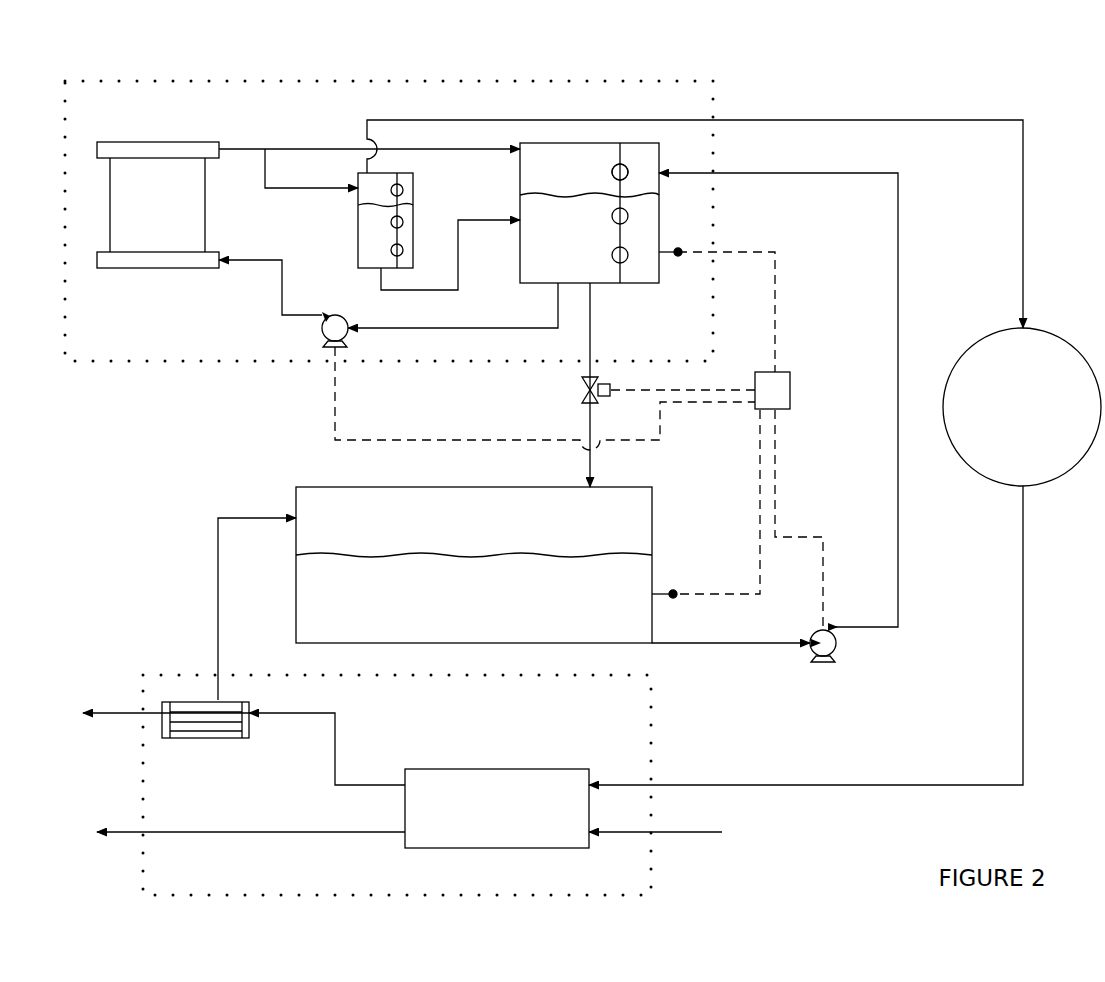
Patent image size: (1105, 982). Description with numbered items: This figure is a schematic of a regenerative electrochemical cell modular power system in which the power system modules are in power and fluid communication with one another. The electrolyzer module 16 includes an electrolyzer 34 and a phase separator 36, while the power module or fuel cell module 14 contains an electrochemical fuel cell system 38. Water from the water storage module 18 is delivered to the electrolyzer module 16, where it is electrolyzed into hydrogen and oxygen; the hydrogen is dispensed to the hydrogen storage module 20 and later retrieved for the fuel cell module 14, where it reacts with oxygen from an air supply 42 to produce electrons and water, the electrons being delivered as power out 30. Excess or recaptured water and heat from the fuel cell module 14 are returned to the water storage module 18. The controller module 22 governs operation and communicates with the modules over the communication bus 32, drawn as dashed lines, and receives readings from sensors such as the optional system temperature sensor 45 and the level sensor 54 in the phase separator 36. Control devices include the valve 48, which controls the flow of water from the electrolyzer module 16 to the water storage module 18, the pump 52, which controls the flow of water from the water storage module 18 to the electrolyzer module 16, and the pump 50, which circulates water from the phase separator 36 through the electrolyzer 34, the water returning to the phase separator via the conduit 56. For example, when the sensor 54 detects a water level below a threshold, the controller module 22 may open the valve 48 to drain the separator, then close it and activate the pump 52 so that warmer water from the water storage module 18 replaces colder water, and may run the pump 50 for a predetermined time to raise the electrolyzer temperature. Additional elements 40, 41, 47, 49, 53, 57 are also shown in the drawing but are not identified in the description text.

The power module 14 is at (652, 859).
The electrolyzer module 16 is at (657, 80).
The water storage module 18 is at (653, 515).
The hydrogen storage module 20 is at (1032, 328).
The controller module 22 is at (790, 390).
The power out 30 is at (212, 832).
The communication bus 32 is at (780, 487).
The electrolyzer 34 is at (200, 268).
The phase separator 36 is at (530, 283).
The electrochemical fuel cell system 38 is at (497, 768).
The gas liquid separator 40 is at (358, 250).
The liquid return line 41 is at (486, 218).
The air supply 42 is at (678, 832).
The system temperature sensor 45 is at (673, 594).
The condenser heat exchanger 47 is at (200, 702).
The valve 48 is at (582, 403).
The water supply line 49 is at (590, 337).
The pump 50 is at (323, 329).
The pump 52 is at (836, 648).
The water feed line 53 is at (898, 279).
The sensor 54 is at (630, 172).
The conduit 56 is at (328, 147).
The pump control line 57 is at (397, 328).